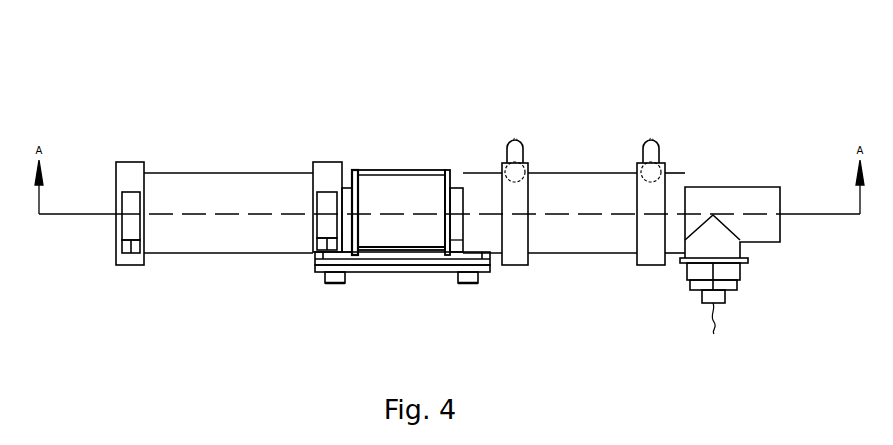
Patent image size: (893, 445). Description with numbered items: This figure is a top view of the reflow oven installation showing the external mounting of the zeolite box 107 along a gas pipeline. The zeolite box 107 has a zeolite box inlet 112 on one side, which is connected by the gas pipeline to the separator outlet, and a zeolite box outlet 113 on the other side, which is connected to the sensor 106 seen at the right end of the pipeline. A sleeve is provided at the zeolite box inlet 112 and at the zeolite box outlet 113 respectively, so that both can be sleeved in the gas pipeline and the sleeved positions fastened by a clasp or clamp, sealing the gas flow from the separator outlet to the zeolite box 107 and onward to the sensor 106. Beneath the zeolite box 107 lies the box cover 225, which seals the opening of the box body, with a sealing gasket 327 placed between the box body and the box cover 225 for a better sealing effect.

The zeolite box 107 is at (403, 95).
The zeolite box inlet 112 is at (346, 188).
The zeolite box outlet 113 is at (461, 187).
The sealing gasket 327 is at (385, 262).
The box cover 225 is at (443, 268).
The sensor 106 is at (737, 283).